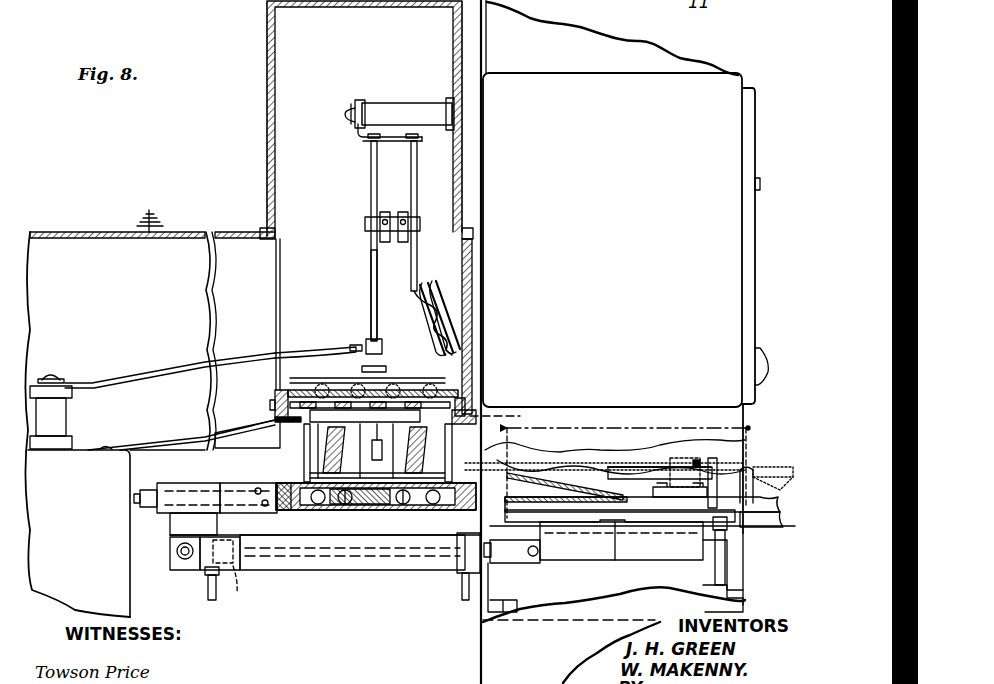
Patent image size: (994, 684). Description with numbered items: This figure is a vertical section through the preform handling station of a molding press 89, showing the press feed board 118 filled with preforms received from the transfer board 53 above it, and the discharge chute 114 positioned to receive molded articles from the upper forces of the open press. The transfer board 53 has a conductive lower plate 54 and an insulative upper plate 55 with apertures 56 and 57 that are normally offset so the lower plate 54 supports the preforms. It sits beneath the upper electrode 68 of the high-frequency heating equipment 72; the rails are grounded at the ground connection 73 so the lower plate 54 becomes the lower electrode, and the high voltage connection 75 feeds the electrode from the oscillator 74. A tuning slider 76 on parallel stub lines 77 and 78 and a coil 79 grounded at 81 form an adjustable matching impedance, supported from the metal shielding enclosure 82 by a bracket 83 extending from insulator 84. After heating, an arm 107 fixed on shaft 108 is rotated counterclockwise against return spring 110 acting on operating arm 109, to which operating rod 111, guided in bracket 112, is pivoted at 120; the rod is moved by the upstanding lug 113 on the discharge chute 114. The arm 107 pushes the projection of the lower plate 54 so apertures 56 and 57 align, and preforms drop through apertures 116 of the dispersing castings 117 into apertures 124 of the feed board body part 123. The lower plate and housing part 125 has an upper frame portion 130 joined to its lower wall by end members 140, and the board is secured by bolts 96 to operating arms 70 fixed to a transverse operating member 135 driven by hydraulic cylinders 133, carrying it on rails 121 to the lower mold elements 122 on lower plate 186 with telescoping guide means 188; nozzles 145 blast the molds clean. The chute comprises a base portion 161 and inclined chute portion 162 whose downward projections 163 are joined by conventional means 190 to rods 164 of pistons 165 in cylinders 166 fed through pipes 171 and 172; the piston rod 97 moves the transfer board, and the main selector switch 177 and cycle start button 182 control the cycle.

The transfer board 53 is at (476, 380).
The lower plate 54 is at (438, 395).
The upper plate 55 is at (378, 392).
The apertures 56 is at (365, 412).
The apertures 57 is at (352, 368).
The upper electrode 68 is at (312, 375).
The operating arms 70 is at (210, 484).
The high-frequency heating equipment 72 is at (368, 310).
The ground connection 73 is at (207, 439).
The oscillator 74 is at (86, 548).
The high voltage connection 75 is at (160, 373).
The tuning slider 76 is at (396, 211).
The stub line 77 is at (370, 178).
The stub line 78 is at (416, 180).
The coil 79 is at (424, 292).
The ground 81 is at (474, 256).
The shielding enclosure 82 is at (275, 83).
The bracket 83 is at (352, 136).
The insulator 84 is at (395, 108).
The press 89 is at (634, 55).
The bolts 96 is at (372, 430).
The piston rod 97 is at (377, 467).
The arm 107 is at (476, 406).
The shaft 108 is at (548, 450).
The operating arm 109 is at (490, 418).
The return spring 110 is at (488, 448).
The operating rod 111 is at (630, 466).
The bracket 112 is at (696, 460).
The upstanding lug 113 is at (717, 462).
The discharge chute 114 is at (748, 515).
The apertures 116 is at (376, 509).
The dispersing castings 117 is at (347, 505).
The press feed board 118 is at (368, 520).
The pivotal connection 120 is at (520, 402).
The rails 121 is at (770, 520).
The lower mold elements 122 is at (673, 551).
The body part 123 is at (366, 520).
The apertures 124 is at (326, 520).
The lower plate and housing part 125 is at (415, 505).
The upper frame portion 130 is at (278, 482).
The hydraulic cylinders 133 is at (750, 468).
The transverse operating member 135 is at (165, 482).
The end members 140 is at (452, 522).
The nozzles 145 is at (462, 540).
The base portion 161 is at (636, 541).
The chute portion 162 is at (586, 480).
The downward projections 163 is at (621, 540).
The rods 164 is at (480, 608).
The operating pistons 165 is at (250, 590).
The cylinders 166 is at (285, 566).
The pipe 171 is at (206, 580).
The pipe 172 is at (445, 597).
The main selector switch 177 is at (762, 354).
The cycle start button 182 is at (761, 183).
The lower plate 186 is at (576, 610).
The telescoping guide means 188 is at (748, 576).
The conventional means 190 is at (510, 556).